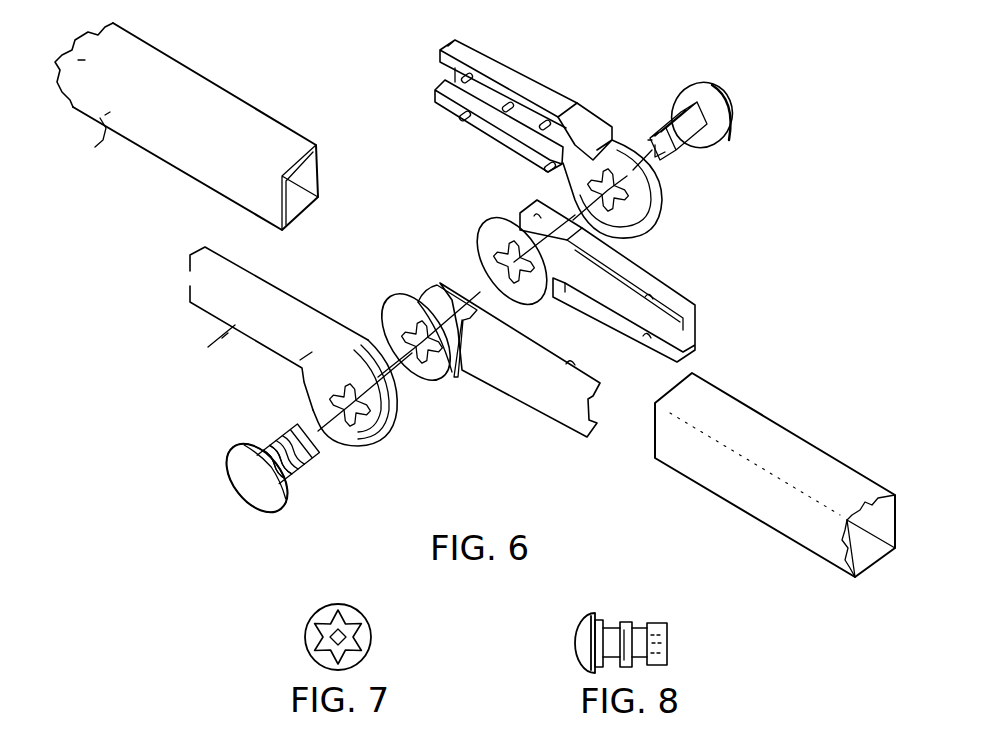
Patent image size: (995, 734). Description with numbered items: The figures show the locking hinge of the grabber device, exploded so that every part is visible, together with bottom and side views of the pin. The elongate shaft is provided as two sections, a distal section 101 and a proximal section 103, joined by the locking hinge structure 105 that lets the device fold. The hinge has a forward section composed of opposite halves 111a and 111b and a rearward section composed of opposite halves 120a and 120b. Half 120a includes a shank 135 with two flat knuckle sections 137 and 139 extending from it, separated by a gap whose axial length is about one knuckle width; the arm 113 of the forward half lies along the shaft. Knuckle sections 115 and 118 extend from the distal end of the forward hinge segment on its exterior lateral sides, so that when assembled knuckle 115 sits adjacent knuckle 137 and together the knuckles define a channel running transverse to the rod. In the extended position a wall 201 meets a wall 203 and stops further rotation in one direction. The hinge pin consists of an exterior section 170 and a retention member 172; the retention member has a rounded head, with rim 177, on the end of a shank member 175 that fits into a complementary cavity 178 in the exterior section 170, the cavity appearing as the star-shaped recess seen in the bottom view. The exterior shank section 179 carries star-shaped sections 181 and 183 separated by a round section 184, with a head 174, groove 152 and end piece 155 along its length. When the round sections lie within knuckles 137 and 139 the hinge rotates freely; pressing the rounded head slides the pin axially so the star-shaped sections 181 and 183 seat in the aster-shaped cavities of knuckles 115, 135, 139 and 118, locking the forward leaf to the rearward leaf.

In FIG. 6, the distal section 101 is at (184, 126).
In FIG. 6, the proximal section 103 is at (793, 457).
In FIG. 6, the locking hinge structure 105 is at (218, 384).
In FIG. 6, the forward hinge section half 111a is at (176, 283).
In FIG. 6, the forward hinge section half 111b is at (478, 43).
In FIG. 6, the arm of first hinge member 113 is at (189, 347).
In FIG. 6, the knuckle section 115 is at (370, 443).
In FIG. 6, the knuckle section 118 is at (637, 220).
In FIG. 6, the rearward hinge section half 120a is at (484, 366).
In FIG. 6, the rearward hinge section half 120b is at (621, 271).
In FIG. 6, the shank 135 is at (503, 385).
In FIG. 6, the knuckle section 137 is at (443, 380).
In FIG. 6, the knuckle section 139 is at (483, 227).
In FIG. 8, the first groove 152 is at (613, 605).
In FIG. 8, the nut 155 is at (653, 620).
In FIG. 6, the exterior section 170 is at (252, 521).
In FIG. 7, the exterior section 170 is at (293, 640).
In FIG. 6, the retention member 172 is at (735, 100).
In FIG. 6, the screw head 174 is at (283, 503).
In FIG. 8, the screw head 174 is at (575, 637).
In FIG. 6, the shank member 175 is at (690, 147).
In FIG. 6, the cap rim 177 is at (736, 135).
In FIG. 7, the cavity 178 is at (343, 622).
In FIG. 6, the exterior shank section 179 is at (303, 473).
In FIG. 8, the star shaped section 181 is at (603, 608).
In FIG. 8, the star shaped section 183 is at (627, 610).
In FIG. 8, the round section 184 is at (642, 608).
In FIG. 6, the wall 201 is at (330, 318).
In FIG. 6, the wall 203 is at (428, 287).